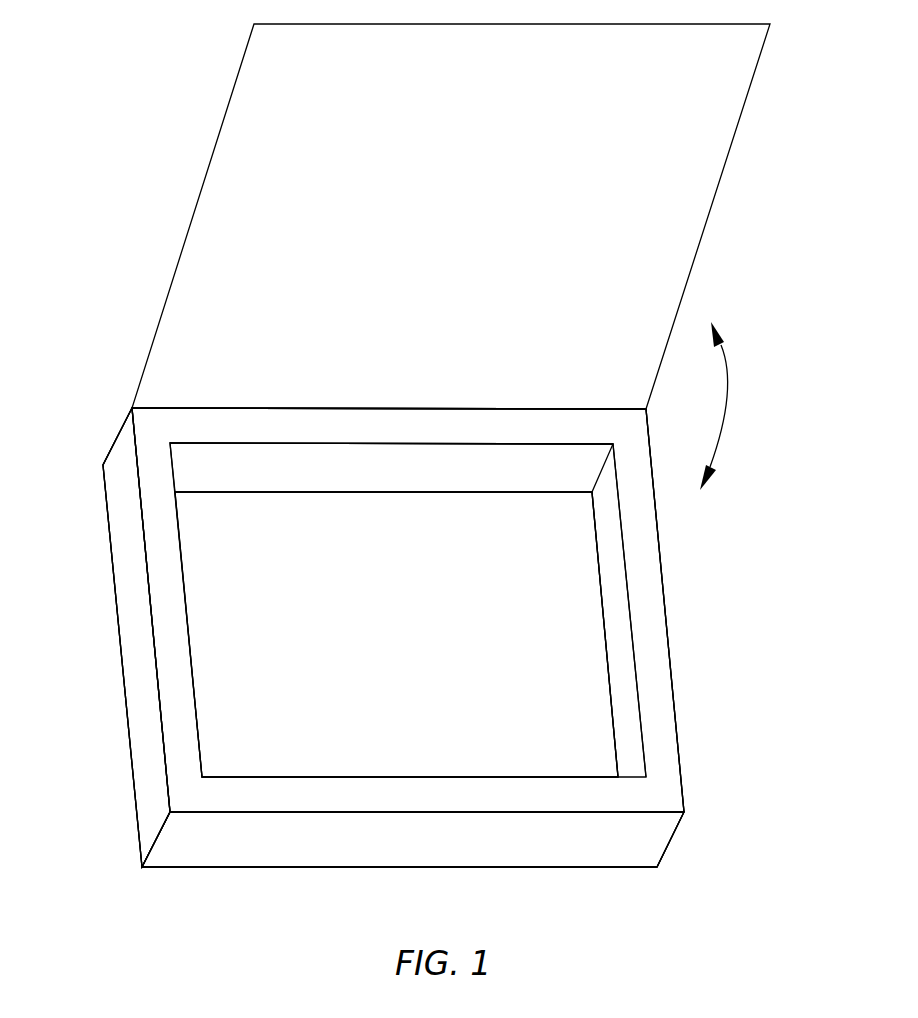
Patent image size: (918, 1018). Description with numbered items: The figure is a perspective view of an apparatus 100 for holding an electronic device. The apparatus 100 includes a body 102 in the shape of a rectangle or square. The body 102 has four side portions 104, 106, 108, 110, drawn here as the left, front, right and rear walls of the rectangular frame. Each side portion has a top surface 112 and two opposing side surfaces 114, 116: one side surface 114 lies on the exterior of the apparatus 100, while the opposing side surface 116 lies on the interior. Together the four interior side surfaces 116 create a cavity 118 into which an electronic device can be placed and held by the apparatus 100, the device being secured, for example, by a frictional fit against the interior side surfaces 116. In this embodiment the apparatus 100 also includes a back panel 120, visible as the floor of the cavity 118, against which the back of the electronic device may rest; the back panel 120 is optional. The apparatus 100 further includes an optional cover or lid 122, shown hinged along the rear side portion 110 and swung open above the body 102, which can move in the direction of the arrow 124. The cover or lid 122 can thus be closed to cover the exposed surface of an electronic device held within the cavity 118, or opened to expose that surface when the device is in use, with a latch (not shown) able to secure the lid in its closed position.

The apparatus for holding an electronic device 100 is at (128, 84).
The body 102 is at (117, 438).
The side portion 104 is at (128, 585).
The side portion 106 is at (542, 850).
The side portion 108 is at (648, 588).
The side portion 110 is at (395, 428).
The top surface 112 is at (166, 615).
The exterior side surface 114 is at (145, 762).
The interior side surface 116 is at (302, 482).
The cavity 118 is at (230, 720).
The back panel 120 is at (420, 654).
The cover or lid 122 is at (185, 240).
The arrow 124 is at (725, 363).